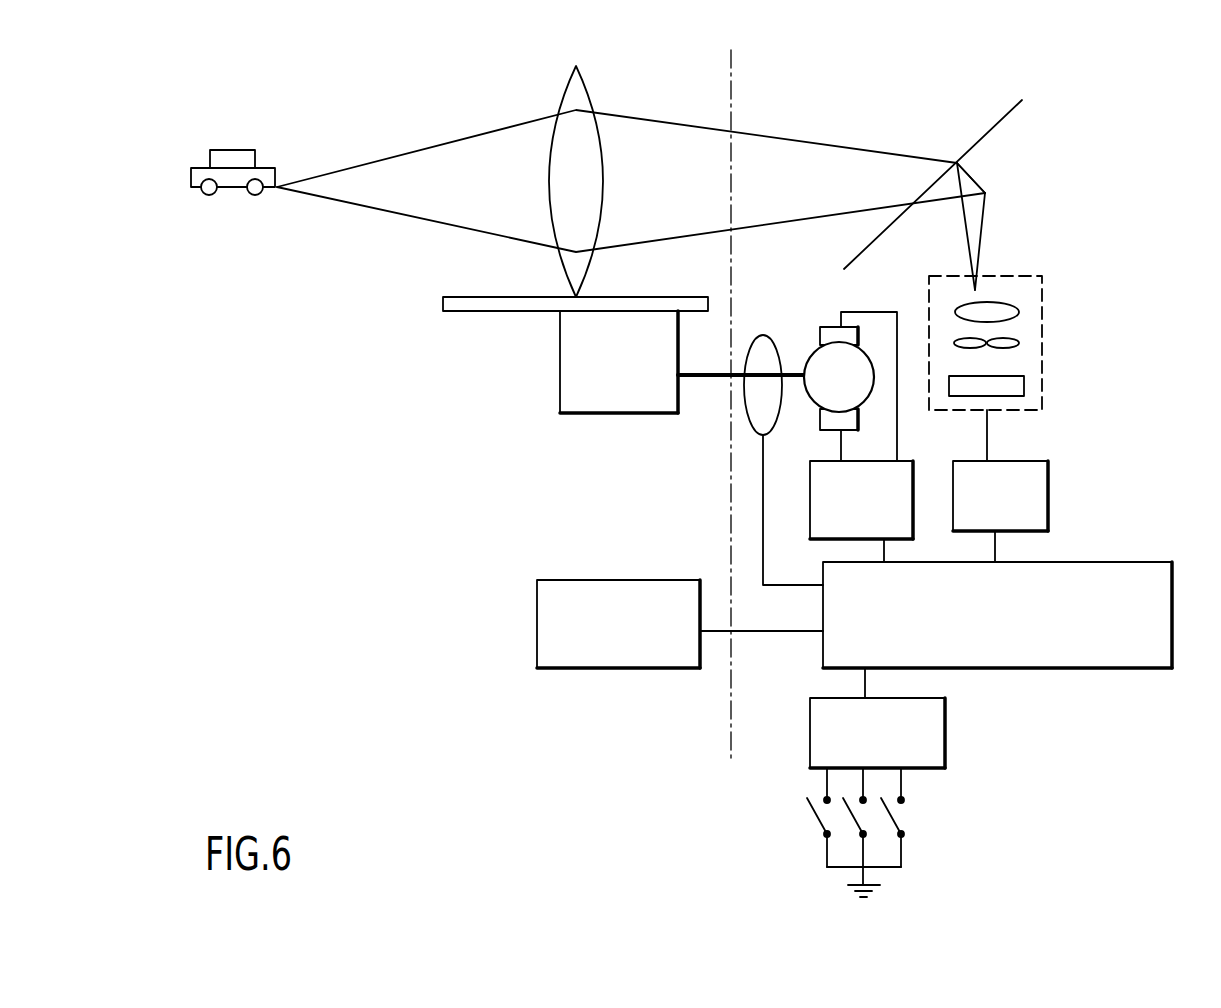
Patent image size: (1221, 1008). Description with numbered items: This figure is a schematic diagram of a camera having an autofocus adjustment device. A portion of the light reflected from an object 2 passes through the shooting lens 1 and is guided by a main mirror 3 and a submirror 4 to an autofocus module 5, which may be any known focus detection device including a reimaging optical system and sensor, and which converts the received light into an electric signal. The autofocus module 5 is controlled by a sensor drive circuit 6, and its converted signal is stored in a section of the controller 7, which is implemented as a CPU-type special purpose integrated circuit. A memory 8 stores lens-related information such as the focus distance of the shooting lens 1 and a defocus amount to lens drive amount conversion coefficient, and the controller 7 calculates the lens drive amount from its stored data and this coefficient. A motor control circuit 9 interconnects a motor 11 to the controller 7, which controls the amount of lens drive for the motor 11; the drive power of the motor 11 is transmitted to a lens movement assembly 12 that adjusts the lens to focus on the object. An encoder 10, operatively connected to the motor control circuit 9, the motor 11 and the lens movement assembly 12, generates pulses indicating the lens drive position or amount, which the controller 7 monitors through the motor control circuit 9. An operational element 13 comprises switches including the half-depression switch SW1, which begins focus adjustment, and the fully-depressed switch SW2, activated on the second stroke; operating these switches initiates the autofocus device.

The shooting lens 1 is at (590, 95).
The object 2 is at (229, 150).
The main mirror 3 is at (993, 127).
The submirror 4 is at (975, 182).
The autofocus module 5 is at (1044, 378).
The sensor drive circuit 6 is at (1048, 495).
The controller 7 is at (1118, 670).
The memory 8 is at (536, 655).
The motor control circuit 9 is at (811, 510).
The encoder 10 is at (760, 436).
The motor 11 is at (825, 323).
The lens movement assembly 12 is at (562, 415).
The operational element 13 is at (947, 757).
The half-depression switch SW1 is at (826, 834).
The fully-depressed switch SW2 is at (866, 838).